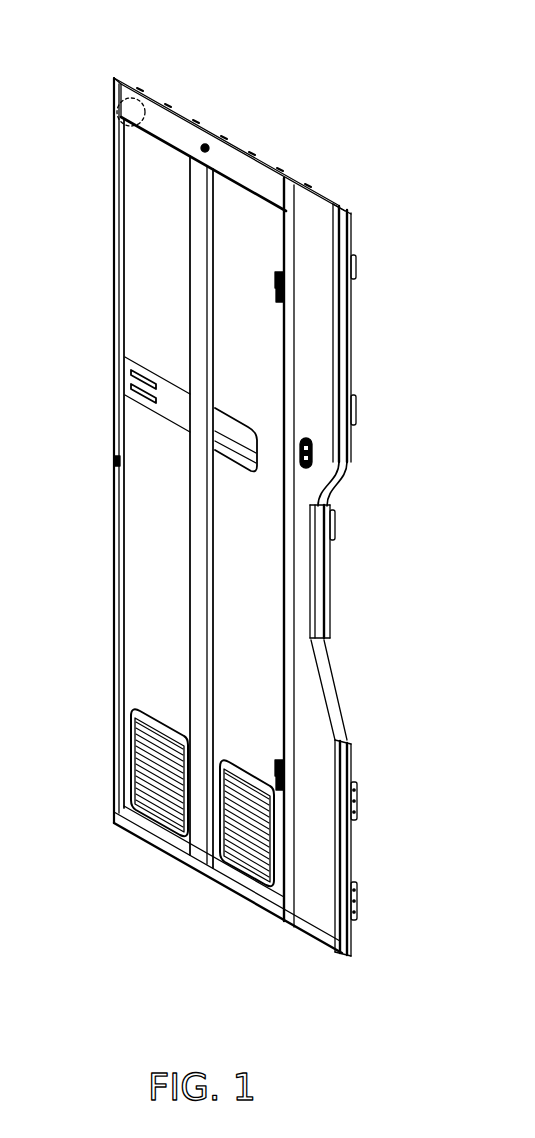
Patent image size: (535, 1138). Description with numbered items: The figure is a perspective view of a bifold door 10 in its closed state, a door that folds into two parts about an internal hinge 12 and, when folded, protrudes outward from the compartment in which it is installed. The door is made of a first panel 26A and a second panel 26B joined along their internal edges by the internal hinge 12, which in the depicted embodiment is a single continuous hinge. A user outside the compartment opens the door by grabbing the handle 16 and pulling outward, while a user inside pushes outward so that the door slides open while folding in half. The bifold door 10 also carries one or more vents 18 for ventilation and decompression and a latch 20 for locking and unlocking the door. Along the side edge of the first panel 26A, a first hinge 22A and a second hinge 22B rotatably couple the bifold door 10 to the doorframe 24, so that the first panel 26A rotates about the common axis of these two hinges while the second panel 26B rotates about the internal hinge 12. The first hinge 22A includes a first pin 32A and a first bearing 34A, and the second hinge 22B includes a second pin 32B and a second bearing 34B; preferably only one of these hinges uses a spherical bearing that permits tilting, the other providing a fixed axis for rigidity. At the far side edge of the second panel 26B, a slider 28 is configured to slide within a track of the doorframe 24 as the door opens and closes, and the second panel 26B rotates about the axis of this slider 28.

The bifold door 10 is at (82, 191).
The internal hinge 12 is at (207, 548).
The handle 16 is at (232, 452).
The vent 18 is at (153, 714).
The latch 20 is at (128, 358).
The first hinge 22A is at (410, 714).
The second hinge 22B is at (410, 224).
The doorframe 24 is at (238, 142).
The first panel 26A is at (252, 328).
The second panel 26B is at (148, 325).
The slider 28 is at (121, 112).
The first pin 32A is at (283, 757).
The second pin 32B is at (283, 268).
The first bearing 34A is at (284, 778).
The second bearing 34B is at (284, 290).